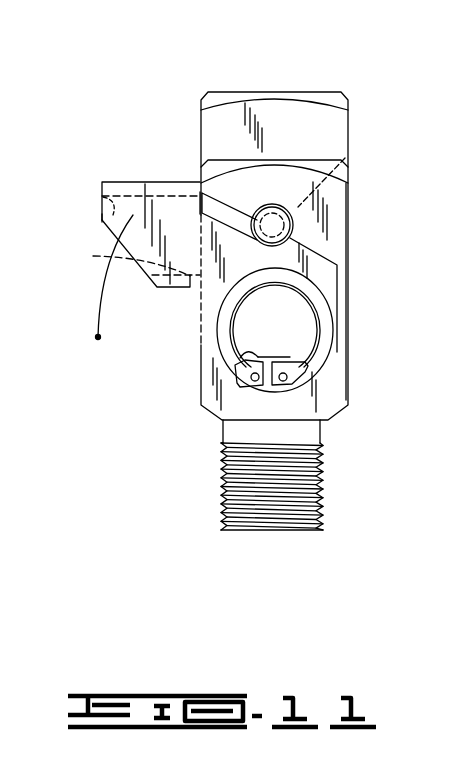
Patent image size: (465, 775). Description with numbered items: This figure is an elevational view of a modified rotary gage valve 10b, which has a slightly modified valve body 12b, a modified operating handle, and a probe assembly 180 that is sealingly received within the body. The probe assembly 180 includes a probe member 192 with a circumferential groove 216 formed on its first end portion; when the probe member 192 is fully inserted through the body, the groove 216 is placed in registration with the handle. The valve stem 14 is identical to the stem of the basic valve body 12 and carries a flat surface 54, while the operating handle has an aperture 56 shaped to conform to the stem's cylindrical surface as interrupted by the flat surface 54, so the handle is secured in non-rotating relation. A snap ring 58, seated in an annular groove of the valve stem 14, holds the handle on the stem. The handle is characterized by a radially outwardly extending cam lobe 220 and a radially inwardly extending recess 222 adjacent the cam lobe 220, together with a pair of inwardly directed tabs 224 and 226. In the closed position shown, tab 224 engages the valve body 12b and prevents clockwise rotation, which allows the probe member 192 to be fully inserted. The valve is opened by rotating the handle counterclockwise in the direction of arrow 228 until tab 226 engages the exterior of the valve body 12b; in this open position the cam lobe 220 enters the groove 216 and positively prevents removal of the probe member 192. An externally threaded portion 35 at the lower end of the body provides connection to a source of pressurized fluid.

The valve body 12 is at (273, 78).
The probe assembly 180 is at (227, 118).
The probe member 192 is at (283, 212).
The circumferential groove 216 is at (352, 151).
The radially inwardly extending recess 222 is at (252, 223).
The valve body 12b is at (335, 207).
The cam lobe 220 is at (317, 243).
The rotary gage valve 10b is at (390, 168).
The tab 224 is at (100, 221).
The tab 226 is at (126, 262).
The arrow 228 is at (96, 337).
The snap ring 58 is at (318, 322).
The valve stem 14 is at (300, 343).
The aperture 56 is at (240, 350).
The flat surface 54 is at (248, 372).
The externally threaded portion 35 is at (322, 497).